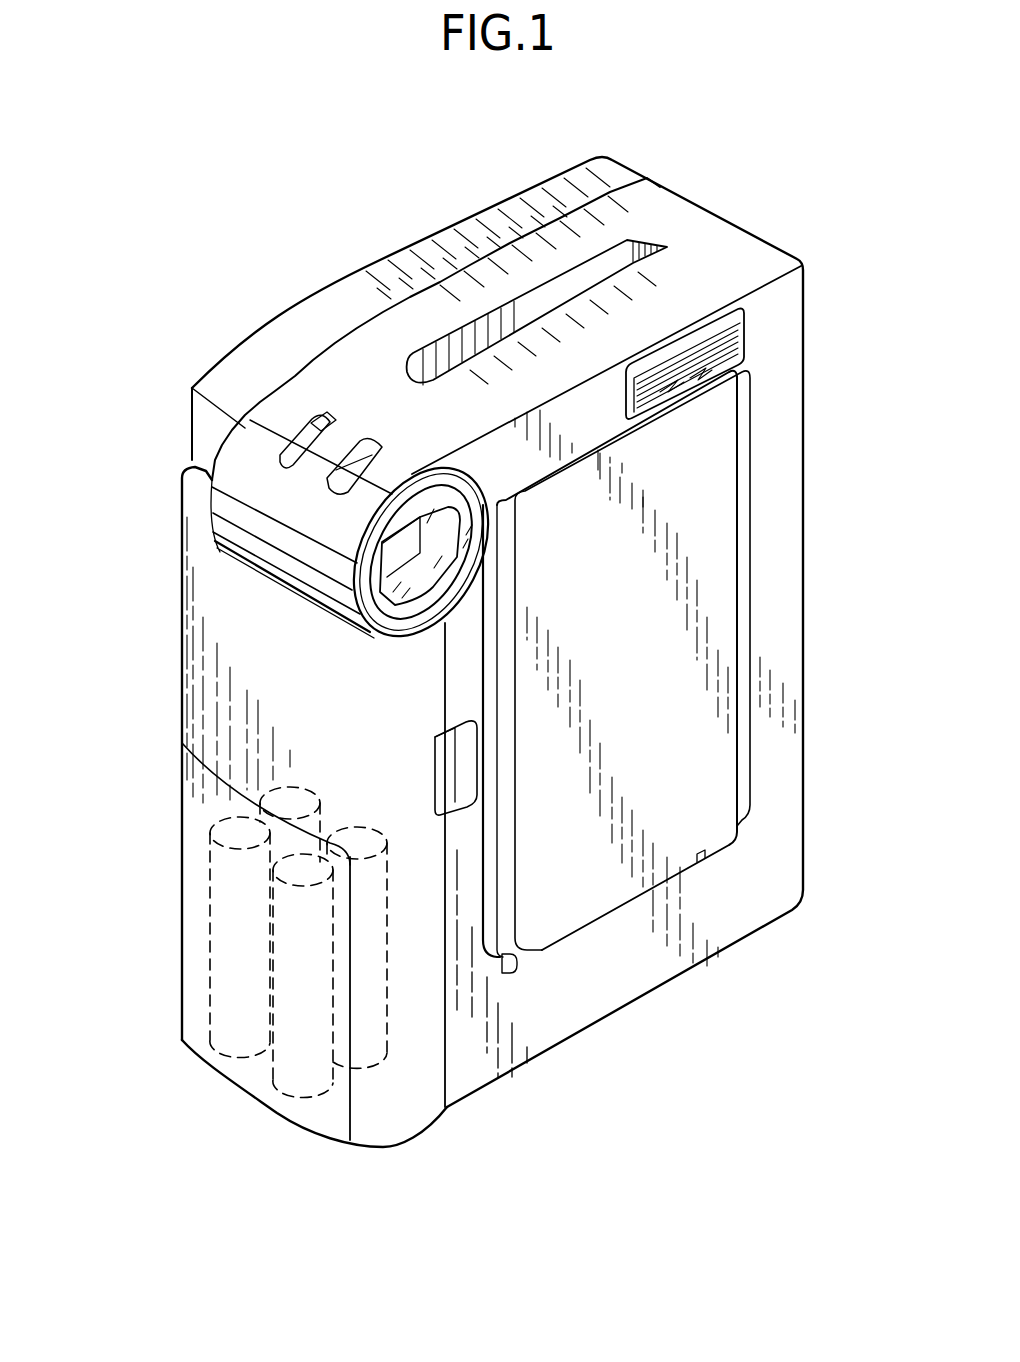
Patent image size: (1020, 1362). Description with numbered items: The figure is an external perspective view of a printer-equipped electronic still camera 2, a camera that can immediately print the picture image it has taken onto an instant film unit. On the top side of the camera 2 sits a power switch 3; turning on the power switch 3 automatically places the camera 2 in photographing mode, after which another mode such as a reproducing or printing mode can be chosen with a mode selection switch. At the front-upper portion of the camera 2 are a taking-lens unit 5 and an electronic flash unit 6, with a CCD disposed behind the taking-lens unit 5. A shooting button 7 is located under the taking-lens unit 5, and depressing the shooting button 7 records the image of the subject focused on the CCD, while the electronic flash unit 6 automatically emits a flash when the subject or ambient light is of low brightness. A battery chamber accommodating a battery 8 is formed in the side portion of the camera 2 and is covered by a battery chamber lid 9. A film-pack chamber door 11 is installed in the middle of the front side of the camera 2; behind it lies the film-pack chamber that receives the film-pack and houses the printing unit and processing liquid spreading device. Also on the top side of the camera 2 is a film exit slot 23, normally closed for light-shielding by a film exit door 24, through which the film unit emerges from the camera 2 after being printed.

The printer-equipped electronic still camera 2 is at (348, 268).
The power switch 3 is at (320, 420).
The taking-lens unit 5 is at (400, 620).
The electronic flash unit 6 is at (743, 343).
The shooting button 7 is at (442, 781).
The battery 8 is at (210, 889).
The battery chamber lid 9 is at (257, 1092).
The film-pack chamber door 11 is at (712, 515).
The film exit slot 23 is at (600, 287).
The film exit door 24 is at (620, 257).